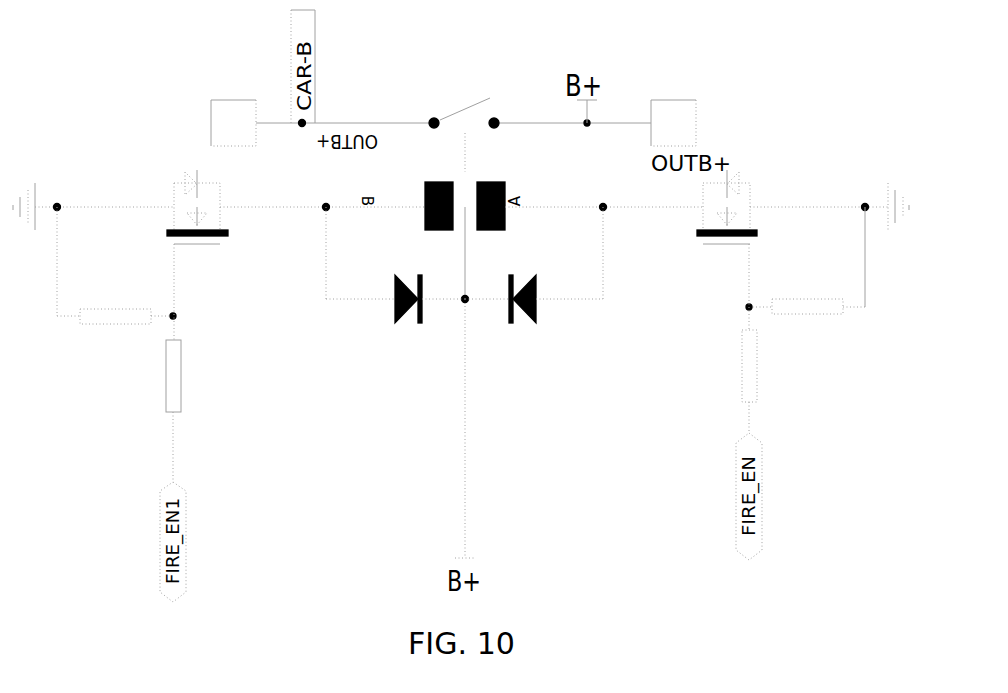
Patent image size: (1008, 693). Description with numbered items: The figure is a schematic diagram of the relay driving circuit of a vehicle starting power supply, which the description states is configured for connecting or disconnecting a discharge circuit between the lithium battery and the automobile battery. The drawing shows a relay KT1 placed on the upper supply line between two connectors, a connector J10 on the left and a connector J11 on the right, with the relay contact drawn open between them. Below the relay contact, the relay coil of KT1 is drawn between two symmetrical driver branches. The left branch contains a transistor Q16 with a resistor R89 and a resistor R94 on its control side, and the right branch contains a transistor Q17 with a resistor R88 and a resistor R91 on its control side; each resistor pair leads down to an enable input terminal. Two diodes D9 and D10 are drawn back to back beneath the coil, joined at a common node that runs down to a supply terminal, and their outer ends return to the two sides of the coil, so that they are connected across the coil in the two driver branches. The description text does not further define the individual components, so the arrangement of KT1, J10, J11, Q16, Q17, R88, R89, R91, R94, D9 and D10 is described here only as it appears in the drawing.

The connector J10 is at (233, 103).
The connector J11 is at (674, 103).
The relay KT1 is at (464, 148).
The transistor Q16 is at (187, 190).
The transistor Q17 is at (748, 195).
The resistor R89 is at (115, 298).
The resistor R94 is at (198, 376).
The resistor R88 is at (807, 289).
The resistor R91 is at (774, 366).
The diode D9 is at (395, 321).
The diode D10 is at (534, 321).